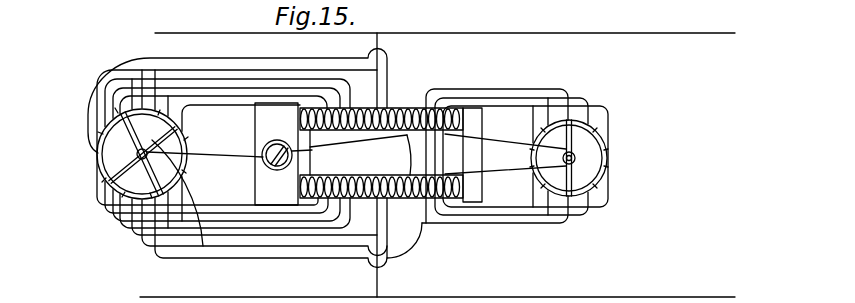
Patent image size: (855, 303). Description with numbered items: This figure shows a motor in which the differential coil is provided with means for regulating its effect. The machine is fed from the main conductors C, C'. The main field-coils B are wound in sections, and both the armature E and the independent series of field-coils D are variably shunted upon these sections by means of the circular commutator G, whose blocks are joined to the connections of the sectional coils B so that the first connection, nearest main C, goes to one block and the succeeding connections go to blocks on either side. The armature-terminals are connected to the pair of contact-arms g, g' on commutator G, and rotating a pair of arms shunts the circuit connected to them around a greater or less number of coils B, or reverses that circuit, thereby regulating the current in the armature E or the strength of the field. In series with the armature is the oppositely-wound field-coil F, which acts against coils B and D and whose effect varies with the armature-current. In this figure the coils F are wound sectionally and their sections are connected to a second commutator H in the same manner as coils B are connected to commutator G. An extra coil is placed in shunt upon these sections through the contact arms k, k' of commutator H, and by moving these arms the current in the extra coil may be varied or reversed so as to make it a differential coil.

The main conductor C is at (430, 160).
The main conductor C' is at (428, 293).
The circular commutator G is at (341, 153).
The contact-arm g is at (143, 145).
The contact-arm g' is at (154, 154).
The contact arm k is at (139, 154).
The contact arm k' is at (348, 158).
The field-coil F is at (368, 154).
The main field-coils B is at (381, 153).
The independent field-coils D is at (358, 147).
The armature E is at (409, 155).
The commutator H is at (579, 158).